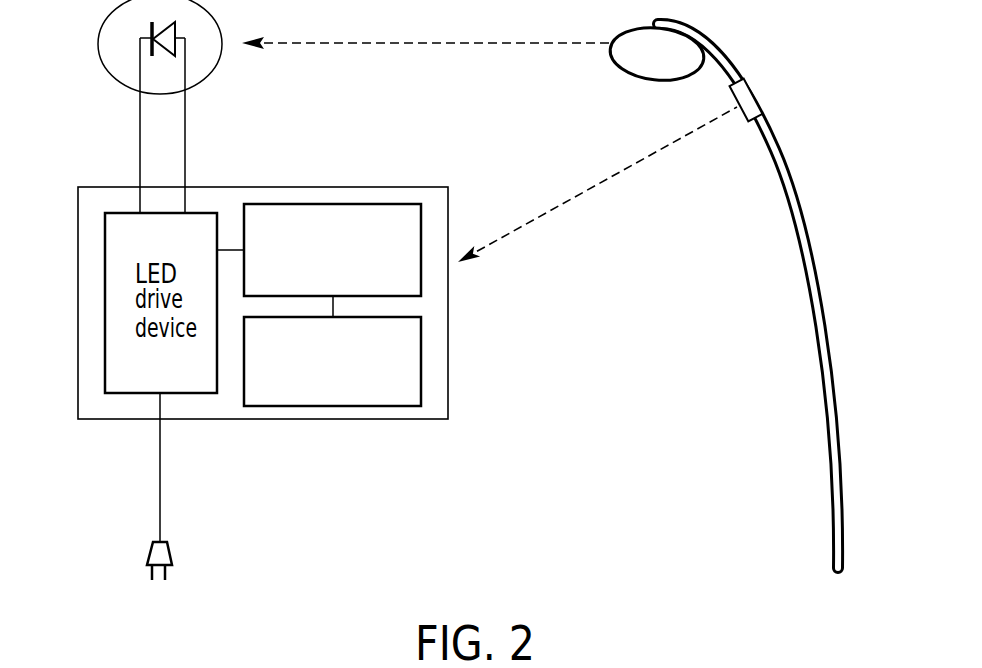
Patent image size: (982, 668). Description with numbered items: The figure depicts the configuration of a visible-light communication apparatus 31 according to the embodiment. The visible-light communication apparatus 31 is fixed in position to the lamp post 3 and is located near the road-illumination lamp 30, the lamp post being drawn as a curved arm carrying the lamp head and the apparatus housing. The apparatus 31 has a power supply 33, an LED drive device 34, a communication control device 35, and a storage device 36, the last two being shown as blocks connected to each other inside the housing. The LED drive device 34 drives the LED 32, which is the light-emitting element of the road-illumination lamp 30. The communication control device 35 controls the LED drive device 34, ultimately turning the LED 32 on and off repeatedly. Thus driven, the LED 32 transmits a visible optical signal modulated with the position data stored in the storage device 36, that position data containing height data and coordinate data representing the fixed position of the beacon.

The lamp post 3 is at (837, 390).
The road-illumination lamp 30 is at (98, 43).
The visible-light communication apparatus 31 is at (448, 200).
The LED 32 is at (175, 50).
The power supply 33 is at (168, 547).
The LED drive device 34 is at (198, 393).
The communication control device 35 is at (421, 285).
The storage device 36 is at (421, 383).